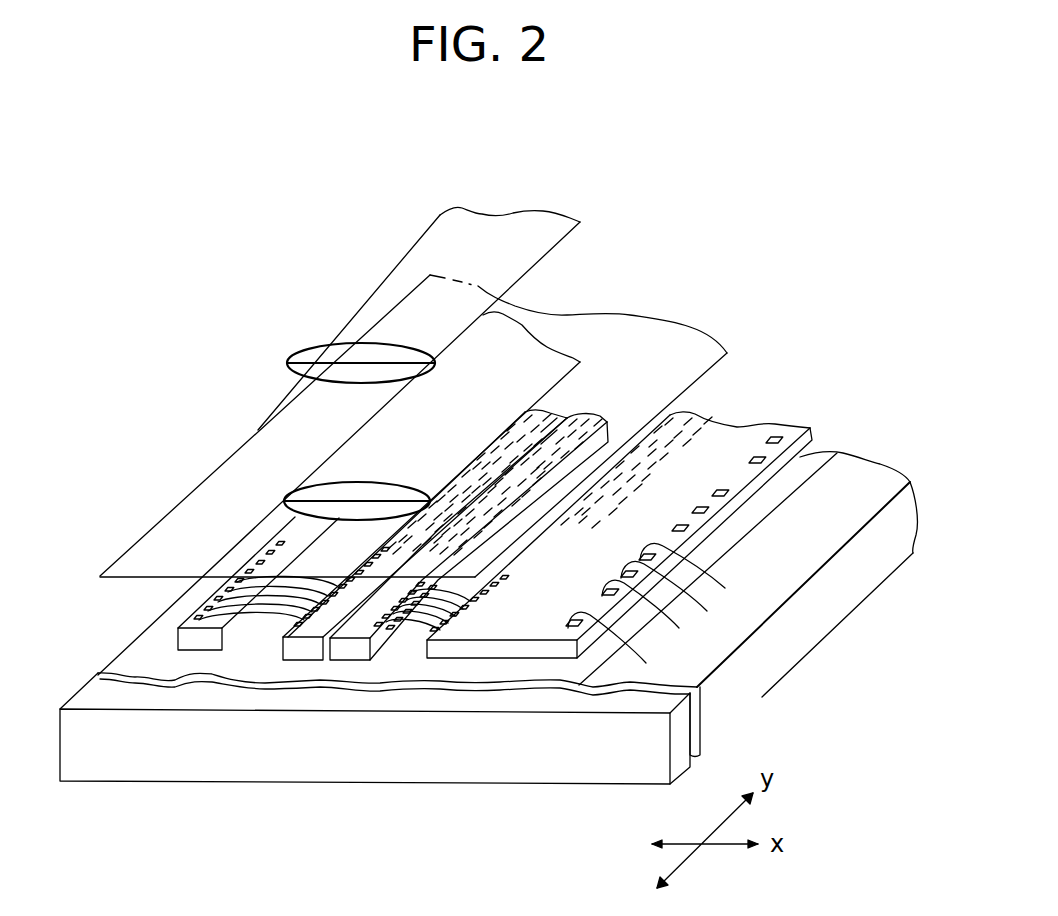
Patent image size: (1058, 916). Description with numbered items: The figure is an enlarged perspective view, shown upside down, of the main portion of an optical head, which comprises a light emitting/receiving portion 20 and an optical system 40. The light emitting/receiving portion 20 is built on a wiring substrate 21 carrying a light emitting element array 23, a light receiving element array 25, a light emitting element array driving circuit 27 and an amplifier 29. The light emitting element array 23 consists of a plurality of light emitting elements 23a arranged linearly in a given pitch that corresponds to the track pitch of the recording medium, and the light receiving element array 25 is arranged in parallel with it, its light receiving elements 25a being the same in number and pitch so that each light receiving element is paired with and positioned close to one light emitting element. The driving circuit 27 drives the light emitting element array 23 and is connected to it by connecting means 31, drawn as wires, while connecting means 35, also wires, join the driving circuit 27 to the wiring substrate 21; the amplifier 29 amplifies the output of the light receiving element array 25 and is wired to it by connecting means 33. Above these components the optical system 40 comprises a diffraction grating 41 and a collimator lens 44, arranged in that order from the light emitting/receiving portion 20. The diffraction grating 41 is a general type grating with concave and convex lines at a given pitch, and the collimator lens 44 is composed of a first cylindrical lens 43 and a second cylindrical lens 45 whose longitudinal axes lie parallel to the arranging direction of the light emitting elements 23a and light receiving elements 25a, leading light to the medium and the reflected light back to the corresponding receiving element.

The light emitting/receiving portion 20 is at (145, 628).
The wiring substrate 21 is at (682, 738).
The light emitting element array 23 is at (358, 655).
The light emitting elements 23a is at (360, 652).
The light receiving element array 25 is at (313, 645).
The light receiving elements 25a is at (293, 652).
The light emitting element array driving circuit 27 is at (503, 658).
The amplifier 29 is at (192, 652).
The connecting means 31 is at (418, 605).
The connecting means 33 is at (270, 622).
The connecting means 35 is at (603, 628).
The optical system 40 is at (185, 315).
The diffraction grating 41 is at (173, 505).
The first cylindrical lens 43 is at (296, 491).
The collimator lens 44 is at (260, 313).
The second cylindrical lens 45 is at (298, 357).